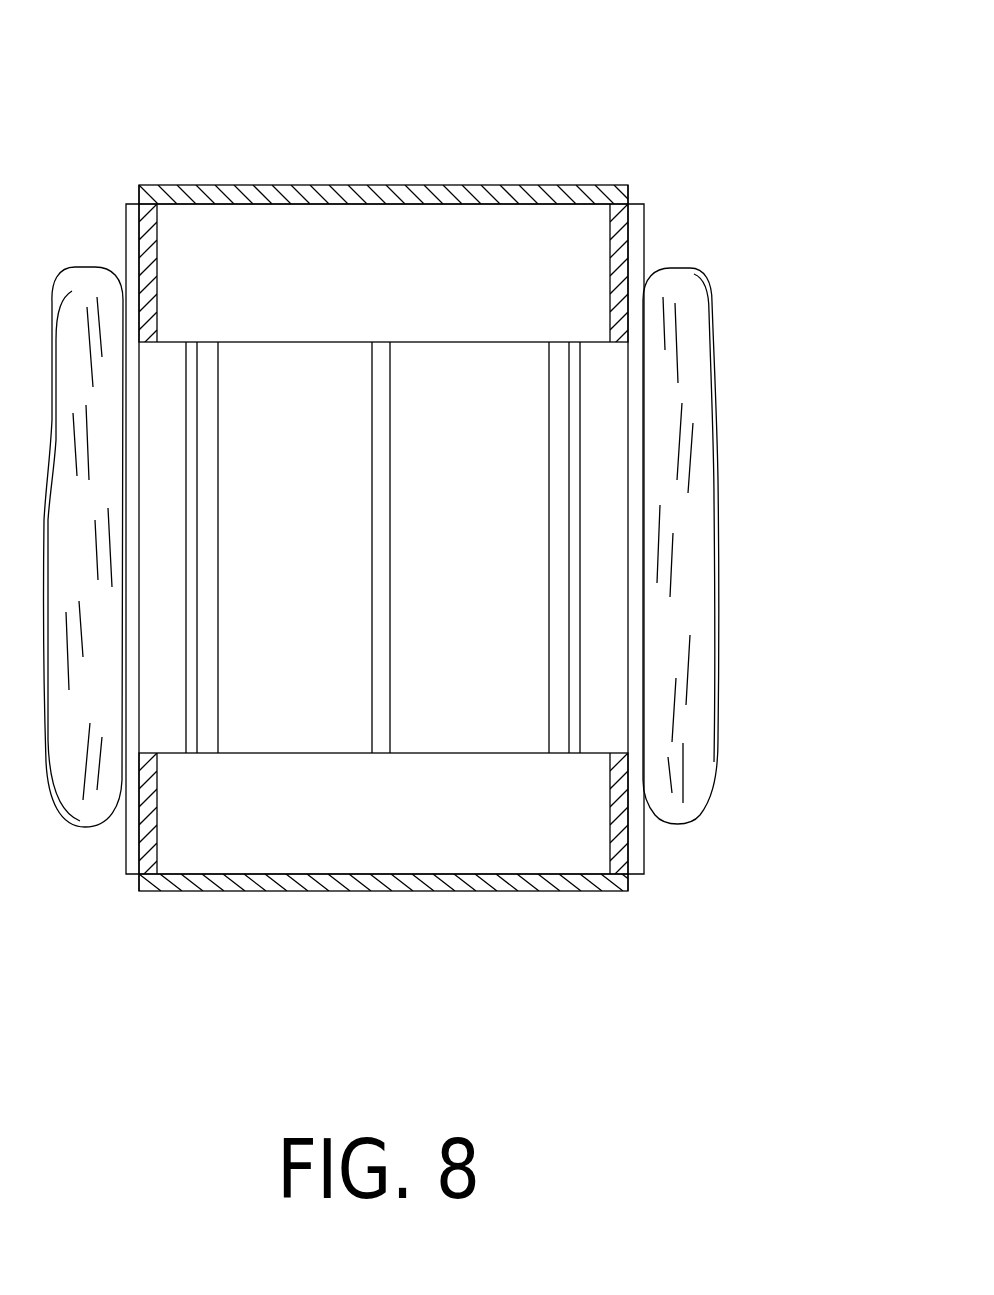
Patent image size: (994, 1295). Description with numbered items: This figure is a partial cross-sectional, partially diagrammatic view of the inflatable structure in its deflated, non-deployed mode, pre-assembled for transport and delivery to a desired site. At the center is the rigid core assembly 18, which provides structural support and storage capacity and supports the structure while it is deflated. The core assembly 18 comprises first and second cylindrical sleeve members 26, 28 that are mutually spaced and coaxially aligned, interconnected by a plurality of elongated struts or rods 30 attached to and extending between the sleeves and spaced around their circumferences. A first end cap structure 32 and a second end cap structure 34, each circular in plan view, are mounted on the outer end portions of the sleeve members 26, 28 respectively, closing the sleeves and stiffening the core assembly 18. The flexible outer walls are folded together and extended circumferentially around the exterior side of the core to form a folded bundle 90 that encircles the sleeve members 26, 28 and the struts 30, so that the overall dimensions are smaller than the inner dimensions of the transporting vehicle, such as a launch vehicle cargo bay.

The core assembly 18 is at (489, 120).
The first cylindrical sleeve member 26 is at (403, 846).
The second cylindrical sleeve member 28 is at (407, 296).
The struts or rods 30 is at (378, 543).
The first end cap structure 32 is at (238, 893).
The second end cap structure 34 is at (262, 185).
The folded bundle 90 is at (720, 518).